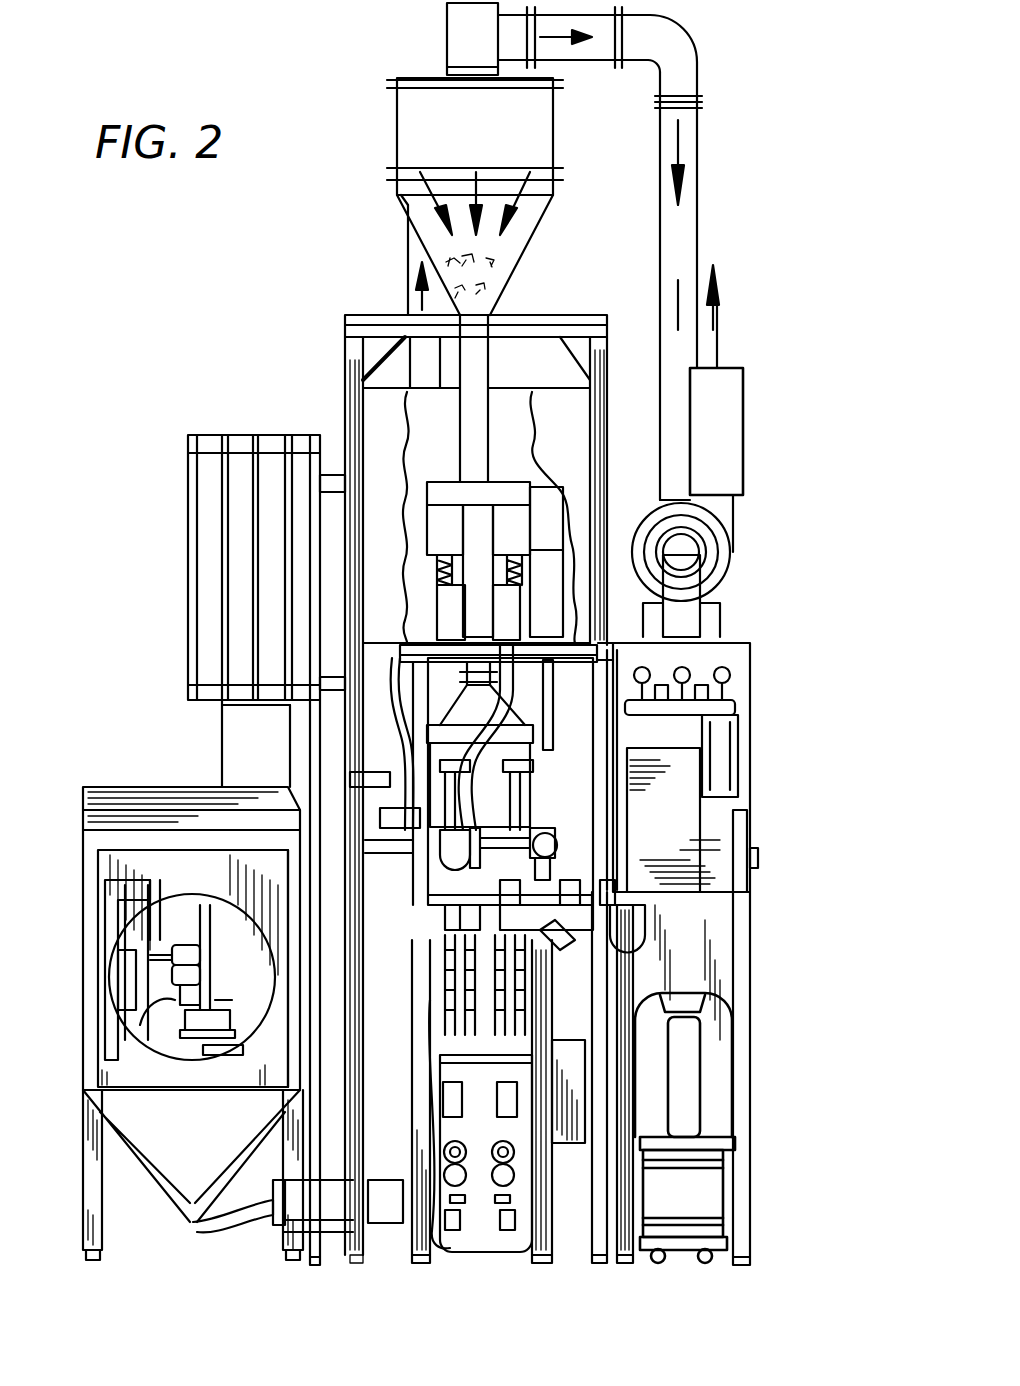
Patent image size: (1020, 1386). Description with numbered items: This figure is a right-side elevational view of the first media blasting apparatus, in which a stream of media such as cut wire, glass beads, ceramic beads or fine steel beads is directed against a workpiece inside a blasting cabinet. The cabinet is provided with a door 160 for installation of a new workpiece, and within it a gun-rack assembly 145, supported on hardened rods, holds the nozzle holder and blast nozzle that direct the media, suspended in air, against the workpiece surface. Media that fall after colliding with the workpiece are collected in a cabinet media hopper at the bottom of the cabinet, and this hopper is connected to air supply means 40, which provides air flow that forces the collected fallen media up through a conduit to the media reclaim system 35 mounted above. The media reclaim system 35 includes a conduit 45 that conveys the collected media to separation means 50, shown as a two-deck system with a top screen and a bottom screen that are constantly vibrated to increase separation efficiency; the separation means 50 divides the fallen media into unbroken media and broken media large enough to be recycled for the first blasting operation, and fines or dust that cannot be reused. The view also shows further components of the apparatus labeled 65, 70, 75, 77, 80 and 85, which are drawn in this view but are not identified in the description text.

The media reclaim system 35 is at (392, 97).
The conduit 45 is at (471, 385).
The separation means 50 is at (420, 476).
The air duct 65 is at (700, 195).
The filter unit 77 is at (748, 375).
The blower 75 is at (724, 555).
The control cabinet 70 is at (740, 766).
The lower cabinet 80 is at (752, 933).
The pressure vessel cover 85 is at (735, 1197).
The door 160 is at (218, 876).
The gun-rack assembly 145 is at (184, 1038).
The air supply means 40 is at (190, 1228).